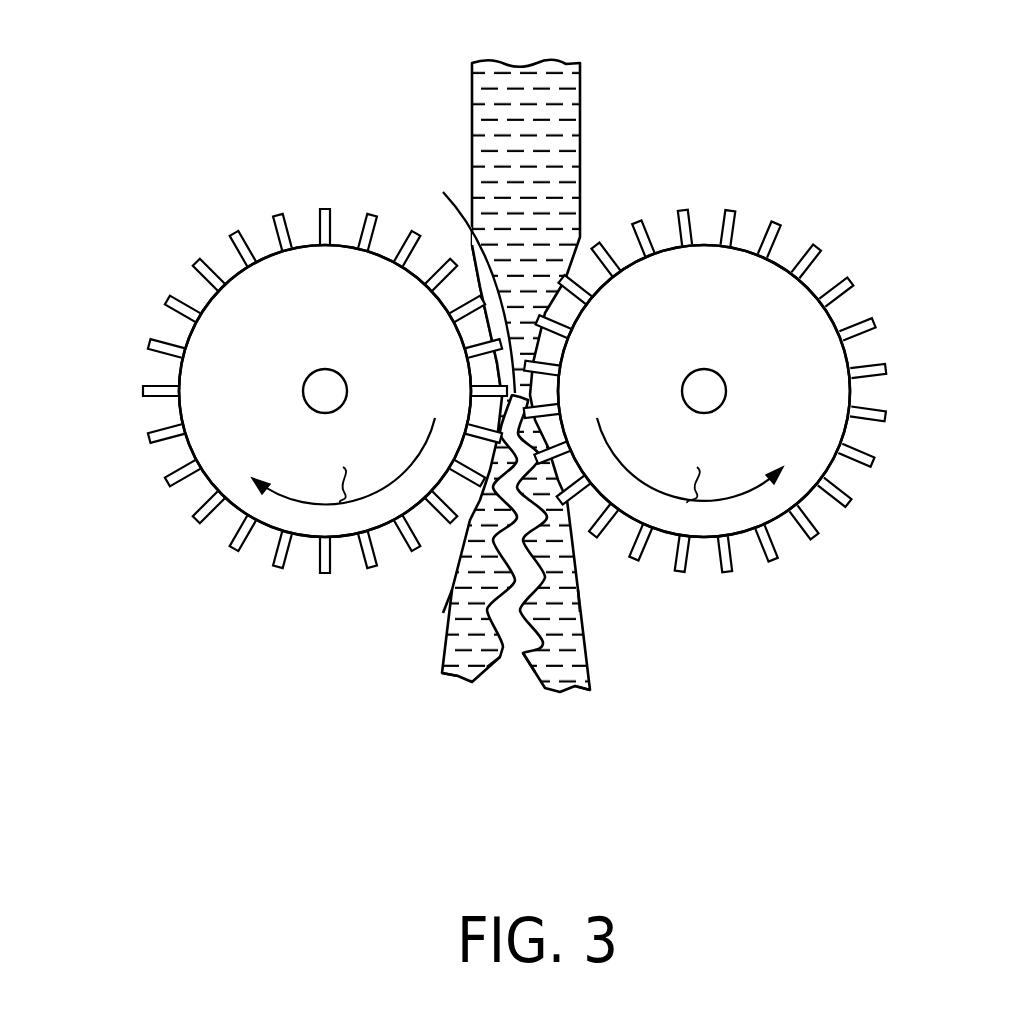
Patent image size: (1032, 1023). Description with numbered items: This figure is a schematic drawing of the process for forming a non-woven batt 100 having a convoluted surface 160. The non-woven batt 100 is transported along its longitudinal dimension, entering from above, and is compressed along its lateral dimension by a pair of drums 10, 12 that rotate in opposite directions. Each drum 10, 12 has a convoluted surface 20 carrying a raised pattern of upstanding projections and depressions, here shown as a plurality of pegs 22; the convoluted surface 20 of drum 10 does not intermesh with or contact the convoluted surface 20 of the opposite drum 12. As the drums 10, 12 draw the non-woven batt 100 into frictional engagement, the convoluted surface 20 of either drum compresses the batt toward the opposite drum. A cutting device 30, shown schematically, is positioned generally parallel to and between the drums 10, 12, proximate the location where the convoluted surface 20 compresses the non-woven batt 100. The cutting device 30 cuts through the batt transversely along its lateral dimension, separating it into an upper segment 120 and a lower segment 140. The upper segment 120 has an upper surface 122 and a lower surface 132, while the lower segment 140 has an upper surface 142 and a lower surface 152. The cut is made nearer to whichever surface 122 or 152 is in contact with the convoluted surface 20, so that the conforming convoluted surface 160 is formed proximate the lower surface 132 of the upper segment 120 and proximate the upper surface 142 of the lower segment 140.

The non-woven batt 100 is at (580, 110).
The cutting device 30 is at (446, 196).
The drum 10 is at (278, 339).
The drum 12 is at (756, 339).
The convoluted surface 20 is at (207, 480).
The pegs 22 is at (150, 347).
The upper segment 120 is at (443, 613).
The upper surface 122 is at (438, 662).
The lower segment 140 is at (607, 612).
The lower surface 152 is at (593, 677).
The lower surface 132 is at (490, 657).
The upper surface 142 is at (520, 660).
The convoluted surface 160 is at (508, 657).